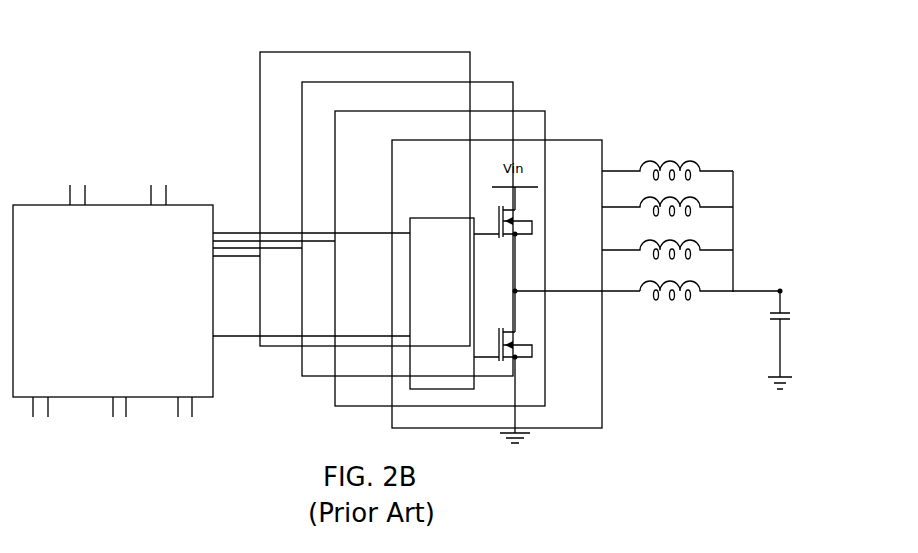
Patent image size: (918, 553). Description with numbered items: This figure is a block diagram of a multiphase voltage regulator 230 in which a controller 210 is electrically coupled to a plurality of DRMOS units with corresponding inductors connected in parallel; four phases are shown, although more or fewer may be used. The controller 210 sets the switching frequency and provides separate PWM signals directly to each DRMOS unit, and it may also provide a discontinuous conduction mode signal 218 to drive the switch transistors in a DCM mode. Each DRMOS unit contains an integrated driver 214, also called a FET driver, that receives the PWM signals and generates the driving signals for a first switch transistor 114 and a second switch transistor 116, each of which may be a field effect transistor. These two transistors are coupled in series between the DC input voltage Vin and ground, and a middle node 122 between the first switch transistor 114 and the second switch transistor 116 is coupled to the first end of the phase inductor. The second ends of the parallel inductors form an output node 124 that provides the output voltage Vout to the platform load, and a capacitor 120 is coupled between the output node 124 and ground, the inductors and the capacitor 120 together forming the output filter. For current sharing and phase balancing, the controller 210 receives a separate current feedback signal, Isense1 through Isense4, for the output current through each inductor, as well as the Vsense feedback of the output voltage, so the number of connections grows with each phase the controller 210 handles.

The multiphase voltage regulator 230 is at (185, 50).
The controller 210 is at (20, 205).
The discontinuous conduction mode signal 218 is at (230, 337).
The integrated driver 214 is at (448, 389).
The first switch transistor 114 is at (533, 222).
The second switch transistor 116 is at (533, 347).
The middle node 122 is at (517, 290).
The output node 124 is at (778, 293).
The capacitor 120 is at (772, 322).